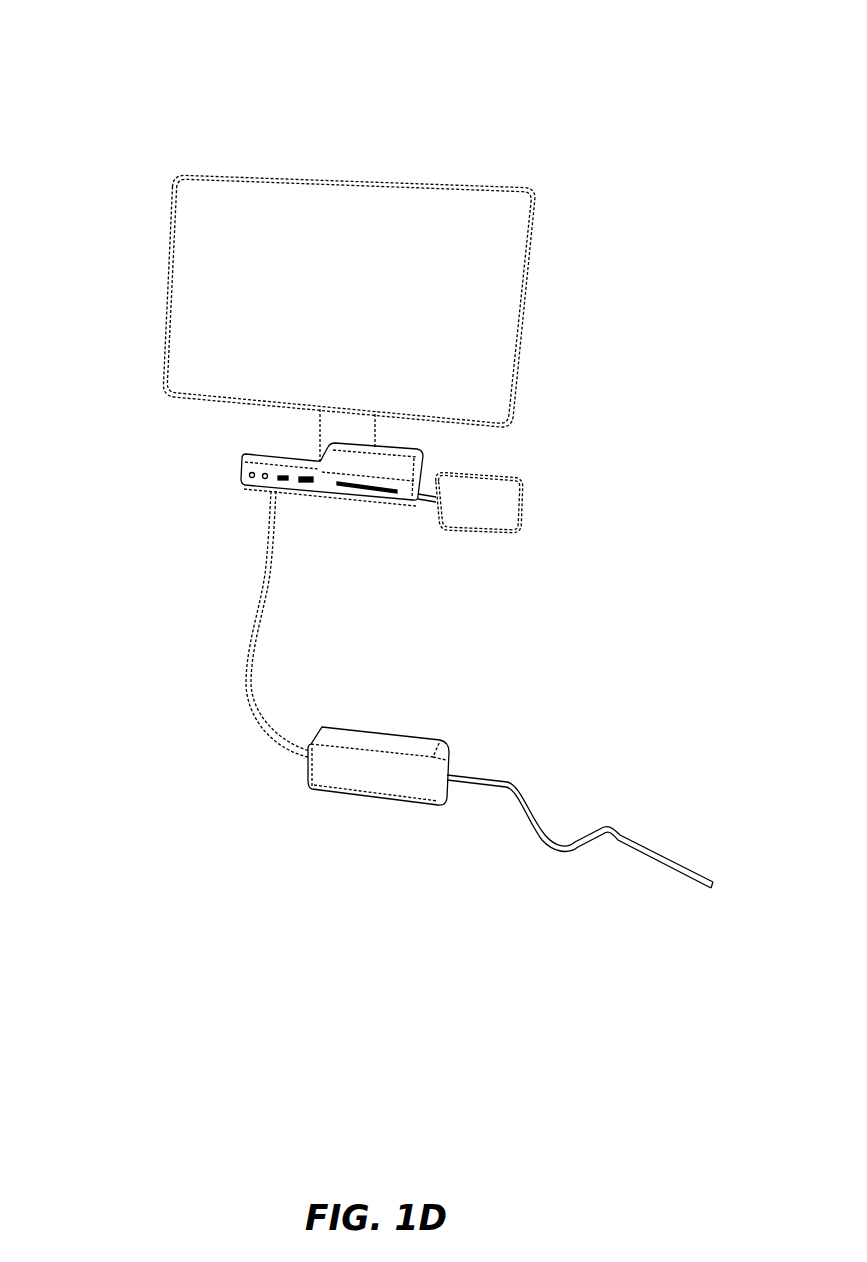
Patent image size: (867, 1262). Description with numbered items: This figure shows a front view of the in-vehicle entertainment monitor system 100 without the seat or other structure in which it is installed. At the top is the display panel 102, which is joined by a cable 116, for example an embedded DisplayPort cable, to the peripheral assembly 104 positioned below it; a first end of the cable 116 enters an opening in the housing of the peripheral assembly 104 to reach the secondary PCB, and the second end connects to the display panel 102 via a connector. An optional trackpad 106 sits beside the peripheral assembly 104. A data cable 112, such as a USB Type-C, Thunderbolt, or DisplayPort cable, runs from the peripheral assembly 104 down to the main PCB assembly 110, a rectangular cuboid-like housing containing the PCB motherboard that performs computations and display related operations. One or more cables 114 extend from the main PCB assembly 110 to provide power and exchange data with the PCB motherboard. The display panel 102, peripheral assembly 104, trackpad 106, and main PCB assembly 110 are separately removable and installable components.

The IVE monitor system 100 is at (688, 92).
The display panel 102 is at (188, 292).
The peripheral assembly 104 is at (237, 473).
The trackpad 106 is at (517, 503).
The main PCB assembly 110 is at (320, 778).
The data cable 112 is at (265, 590).
The cables 114 is at (527, 792).
The cable 116 is at (330, 422).